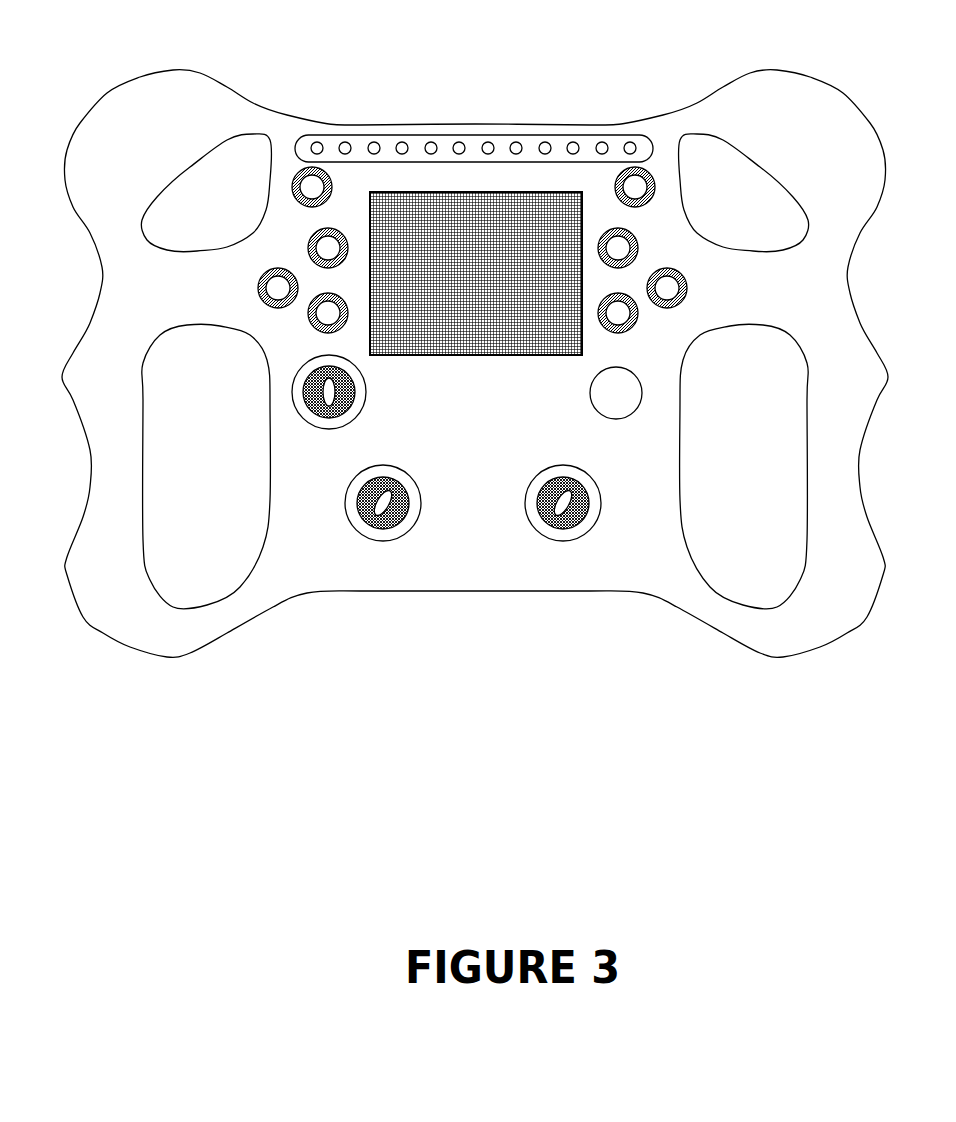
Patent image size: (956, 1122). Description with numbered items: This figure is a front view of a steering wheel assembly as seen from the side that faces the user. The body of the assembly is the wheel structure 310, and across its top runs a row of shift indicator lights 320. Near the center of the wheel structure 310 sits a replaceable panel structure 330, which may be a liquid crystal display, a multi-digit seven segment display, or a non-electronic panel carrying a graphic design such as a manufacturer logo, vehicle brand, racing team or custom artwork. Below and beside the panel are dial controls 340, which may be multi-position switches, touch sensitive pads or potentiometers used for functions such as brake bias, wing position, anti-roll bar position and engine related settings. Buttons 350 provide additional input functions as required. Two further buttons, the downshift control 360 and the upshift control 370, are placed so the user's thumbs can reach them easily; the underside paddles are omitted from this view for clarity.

The wheel structure 310 is at (248, 87).
The shift indicator lights 320 is at (390, 132).
The replaceable panel structure 330 is at (532, 362).
The dial controls 340 is at (372, 410).
The buttons 350 is at (308, 328).
The downshift control 360 is at (288, 173).
The upshift control 370 is at (652, 168).